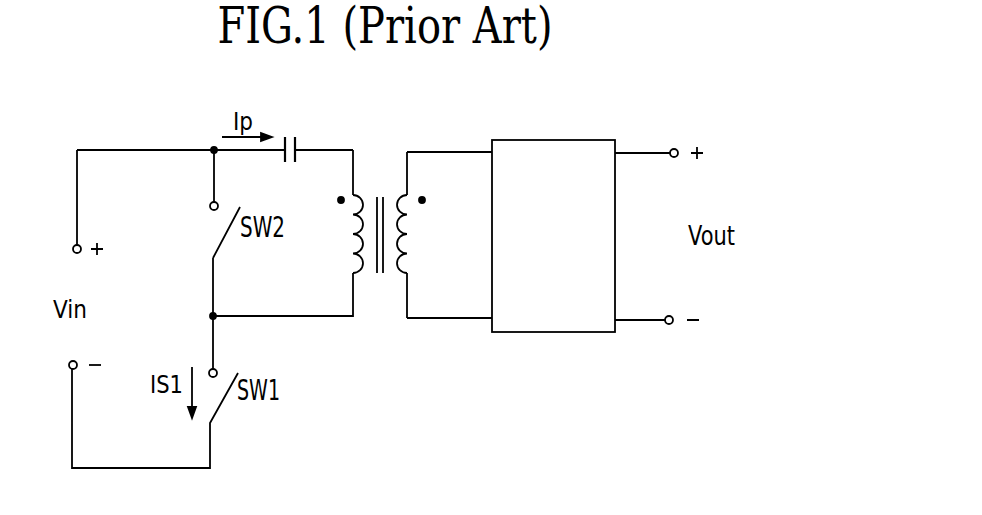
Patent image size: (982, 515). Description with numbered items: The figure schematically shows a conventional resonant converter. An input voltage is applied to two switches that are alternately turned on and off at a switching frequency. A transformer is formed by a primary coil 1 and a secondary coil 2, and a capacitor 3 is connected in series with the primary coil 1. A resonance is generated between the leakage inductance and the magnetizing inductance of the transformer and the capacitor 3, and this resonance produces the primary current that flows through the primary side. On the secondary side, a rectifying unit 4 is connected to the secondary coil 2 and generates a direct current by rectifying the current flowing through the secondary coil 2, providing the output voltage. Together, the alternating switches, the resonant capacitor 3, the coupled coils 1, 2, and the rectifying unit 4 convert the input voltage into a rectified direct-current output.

The primary coil 1 is at (357, 275).
The secondary coil 2 is at (402, 197).
The capacitor 3 is at (289, 137).
The rectifying unit 4 is at (555, 140).